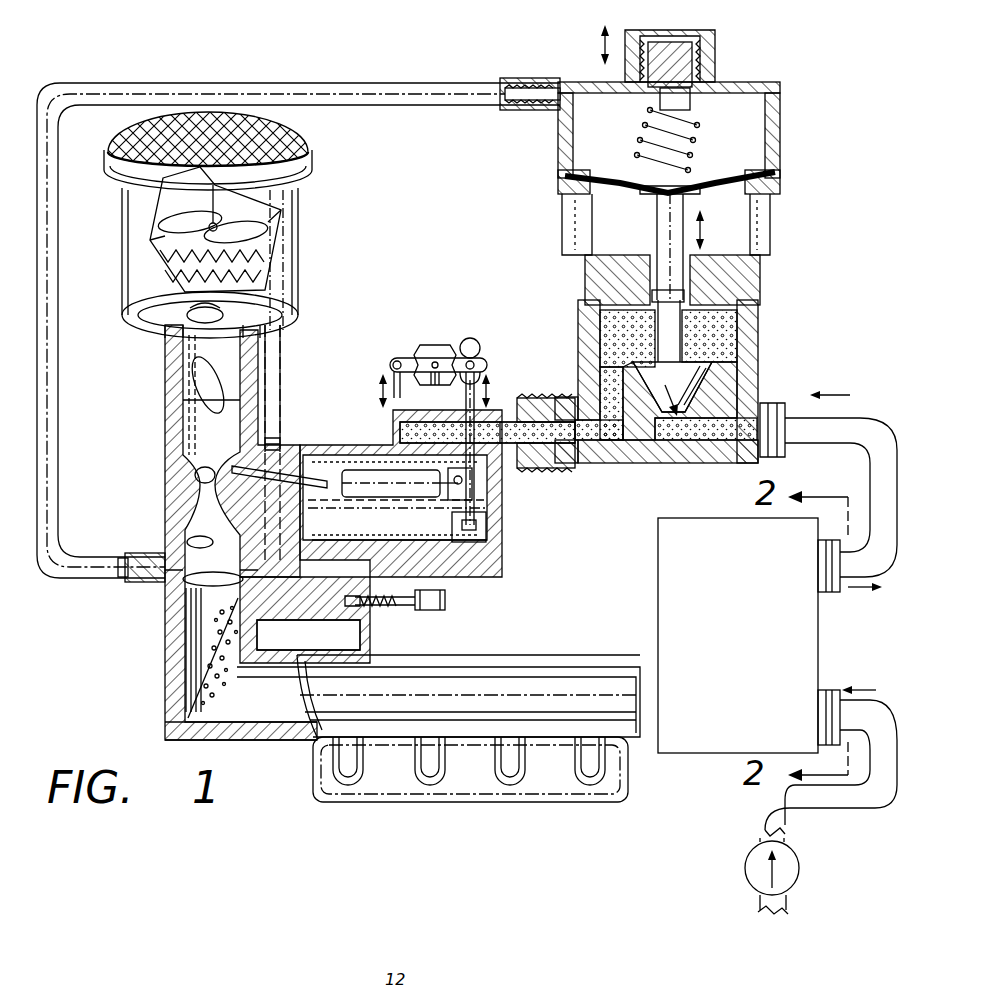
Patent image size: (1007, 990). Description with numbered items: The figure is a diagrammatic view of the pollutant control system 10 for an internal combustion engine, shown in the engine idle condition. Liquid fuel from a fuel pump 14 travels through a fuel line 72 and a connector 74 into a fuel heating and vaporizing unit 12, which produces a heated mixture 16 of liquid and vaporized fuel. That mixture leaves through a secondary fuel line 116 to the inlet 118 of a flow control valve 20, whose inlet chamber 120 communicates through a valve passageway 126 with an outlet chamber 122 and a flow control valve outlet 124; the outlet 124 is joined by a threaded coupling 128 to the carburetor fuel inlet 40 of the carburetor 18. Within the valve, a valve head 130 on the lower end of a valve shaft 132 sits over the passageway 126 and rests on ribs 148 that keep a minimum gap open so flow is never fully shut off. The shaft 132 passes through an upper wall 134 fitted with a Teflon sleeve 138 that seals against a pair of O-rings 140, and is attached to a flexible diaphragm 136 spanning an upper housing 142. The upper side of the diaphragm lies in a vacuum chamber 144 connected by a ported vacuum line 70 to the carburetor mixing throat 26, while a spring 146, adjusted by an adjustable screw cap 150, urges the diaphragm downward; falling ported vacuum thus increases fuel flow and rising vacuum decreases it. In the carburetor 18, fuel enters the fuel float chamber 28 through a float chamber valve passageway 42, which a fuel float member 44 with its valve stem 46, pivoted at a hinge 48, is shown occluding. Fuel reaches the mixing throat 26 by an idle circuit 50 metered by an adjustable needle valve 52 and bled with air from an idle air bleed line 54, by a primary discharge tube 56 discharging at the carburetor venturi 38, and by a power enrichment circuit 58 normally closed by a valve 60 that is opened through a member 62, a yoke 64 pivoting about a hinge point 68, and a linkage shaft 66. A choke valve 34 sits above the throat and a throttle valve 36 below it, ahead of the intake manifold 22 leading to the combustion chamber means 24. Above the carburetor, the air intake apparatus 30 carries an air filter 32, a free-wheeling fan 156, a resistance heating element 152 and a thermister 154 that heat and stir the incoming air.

The pollutant control system 10 is at (252, 78).
The fuel heating and vaporizing unit 12 is at (770, 635).
The fuel pump 14 is at (800, 871).
The fuel mixture 16 is at (556, 470).
The carburetor 18 is at (166, 490).
The flow control valve 20 is at (785, 250).
The intake manifold 22 is at (250, 735).
The combustion chamber means 24 is at (465, 800).
The mixing throat 26 is at (205, 579).
The fuel float chamber 28 is at (347, 445).
The air intake apparatus 30 is at (300, 262).
The air filter 32 is at (310, 160).
The choke valve 34 is at (195, 410).
The throttle valve 36 is at (200, 632).
The carburetor venturi 38 is at (198, 470).
The carburetor fuel inlet 40 is at (500, 420).
The float chamber valve passageway 42 is at (405, 440).
The fuel float member 44 is at (476, 520).
The valve stem 46 is at (410, 470).
The hinge 48 is at (472, 480).
The idle circuit 50 is at (290, 603).
The adjustable needle valve 52 is at (438, 610).
The idle air bleed line 54 is at (283, 372).
The primary discharge tube 56 is at (285, 462).
The power enrichment circuit 58 is at (440, 578).
The valve 60 is at (482, 540).
The member 62 is at (398, 358).
The yoke 64 is at (478, 358).
The linkage shaft 66 is at (464, 392).
The hinge point 68 is at (435, 358).
The ported vacuum line 70 is at (362, 88).
The fuel line 72 is at (858, 808).
The connector 74 is at (843, 690).
The secondary fuel line 116 is at (872, 486).
The inlet 118 is at (770, 408).
The inlet chamber 120 is at (702, 442).
The outlet chamber 122 is at (610, 355).
The flow control valve outlet 124 is at (555, 398).
The valve passageway 126 is at (720, 383).
The threaded coupling 128 is at (570, 470).
The valve head 130 is at (712, 360).
The valve shaft 132 is at (655, 214).
The upper wall 134 is at (600, 290).
The flexible diaphragm 136 is at (740, 172).
The Teflon sleeve 138 is at (740, 300).
The O-rings 140 is at (666, 262).
The upper housing 142 is at (782, 90).
The vacuum chamber 144 is at (535, 92).
The spring 146 is at (645, 128).
The ribs 148 is at (672, 442).
The adjustable screw cap 150 is at (718, 68).
The resistance heating element 152 is at (155, 240).
The thermister 154 is at (200, 315).
The free-wheeling fan 156 is at (262, 233).